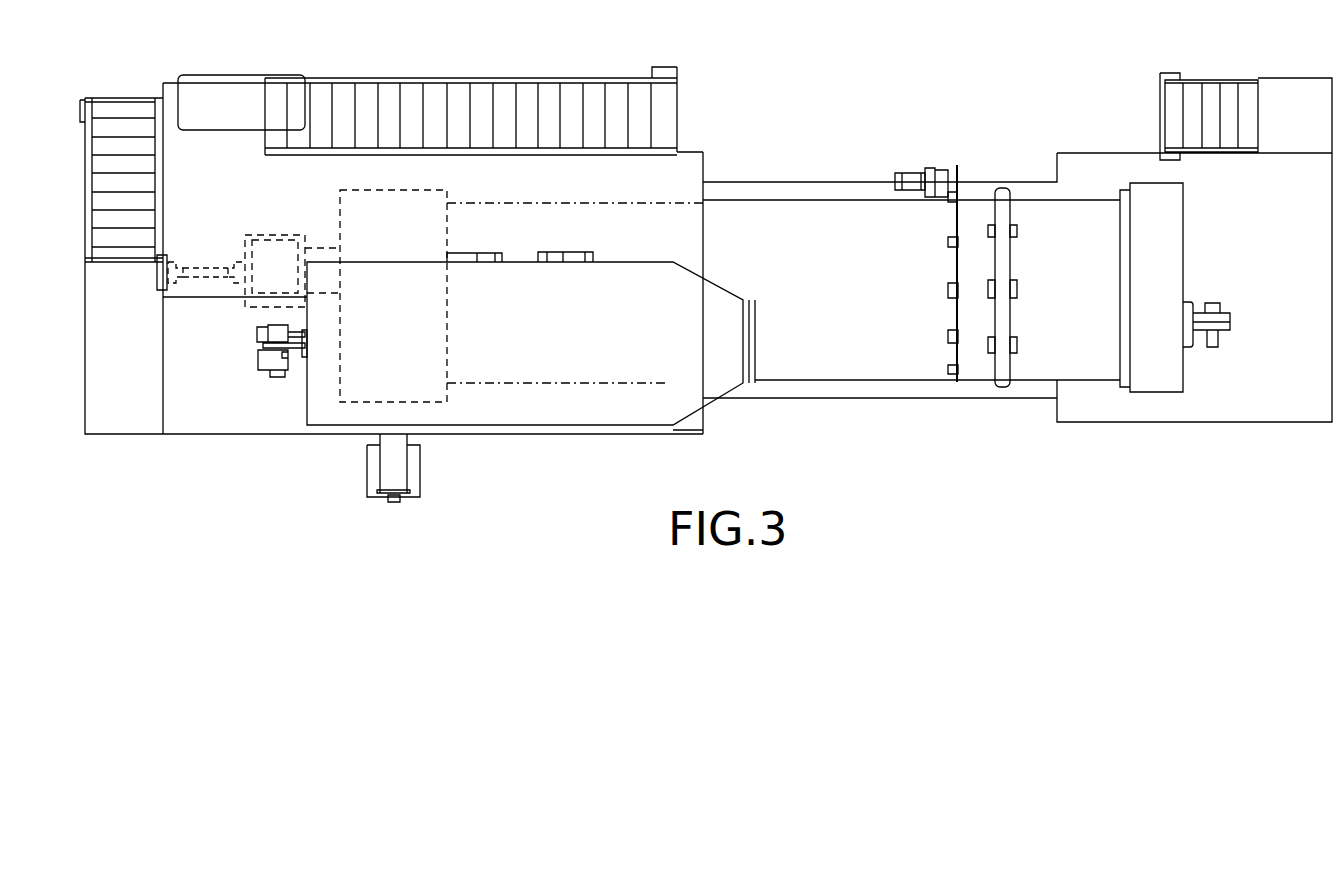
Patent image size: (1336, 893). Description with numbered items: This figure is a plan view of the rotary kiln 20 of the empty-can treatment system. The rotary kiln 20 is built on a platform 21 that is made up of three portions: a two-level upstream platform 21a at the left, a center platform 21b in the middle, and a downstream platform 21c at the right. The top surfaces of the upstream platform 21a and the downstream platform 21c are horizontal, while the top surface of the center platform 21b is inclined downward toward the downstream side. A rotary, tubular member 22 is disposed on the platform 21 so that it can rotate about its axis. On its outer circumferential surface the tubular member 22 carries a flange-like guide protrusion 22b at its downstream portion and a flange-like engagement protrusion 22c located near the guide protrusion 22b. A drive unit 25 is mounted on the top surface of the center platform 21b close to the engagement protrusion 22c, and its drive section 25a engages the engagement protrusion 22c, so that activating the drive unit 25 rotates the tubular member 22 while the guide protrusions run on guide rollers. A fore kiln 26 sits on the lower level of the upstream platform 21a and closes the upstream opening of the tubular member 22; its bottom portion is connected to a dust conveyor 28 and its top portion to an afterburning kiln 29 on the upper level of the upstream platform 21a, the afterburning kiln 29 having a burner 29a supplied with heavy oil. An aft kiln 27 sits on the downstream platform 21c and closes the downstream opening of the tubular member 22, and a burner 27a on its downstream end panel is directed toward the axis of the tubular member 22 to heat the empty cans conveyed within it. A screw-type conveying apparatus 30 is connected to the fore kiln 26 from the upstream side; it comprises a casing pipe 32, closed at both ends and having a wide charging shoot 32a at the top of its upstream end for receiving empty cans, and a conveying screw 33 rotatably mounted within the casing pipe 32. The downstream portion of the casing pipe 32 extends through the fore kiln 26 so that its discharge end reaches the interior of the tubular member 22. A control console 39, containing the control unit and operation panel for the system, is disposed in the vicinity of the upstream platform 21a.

The rotary kiln 20 is at (915, 99).
The platform 21 is at (703, 163).
The upstream platform 21a is at (228, 436).
The center platform 21b is at (848, 398).
The downstream platform 21c is at (1195, 423).
The rotary tubular member 22 is at (793, 210).
The guide protrusion 22b is at (1012, 258).
The engagement protrusion 22c is at (952, 262).
The drive unit 25 is at (902, 174).
The drive section 25a is at (943, 170).
The fore kiln 26 is at (390, 190).
The aft kiln 27 is at (1185, 205).
The burner 27a is at (1220, 303).
The dust conveyor 28 is at (420, 467).
The afterburning kiln 29 is at (540, 426).
The burner 29a is at (272, 368).
The screw-type conveying apparatus 30 is at (238, 263).
The casing pipe 32 is at (250, 236).
The charging shoot 32a is at (283, 240).
The conveying screw 33 is at (200, 283).
The control console 39 is at (245, 78).